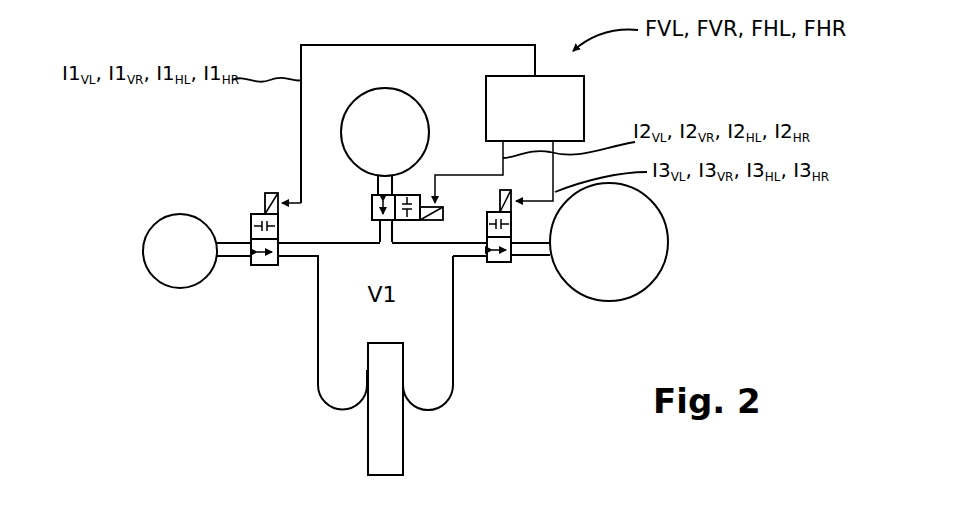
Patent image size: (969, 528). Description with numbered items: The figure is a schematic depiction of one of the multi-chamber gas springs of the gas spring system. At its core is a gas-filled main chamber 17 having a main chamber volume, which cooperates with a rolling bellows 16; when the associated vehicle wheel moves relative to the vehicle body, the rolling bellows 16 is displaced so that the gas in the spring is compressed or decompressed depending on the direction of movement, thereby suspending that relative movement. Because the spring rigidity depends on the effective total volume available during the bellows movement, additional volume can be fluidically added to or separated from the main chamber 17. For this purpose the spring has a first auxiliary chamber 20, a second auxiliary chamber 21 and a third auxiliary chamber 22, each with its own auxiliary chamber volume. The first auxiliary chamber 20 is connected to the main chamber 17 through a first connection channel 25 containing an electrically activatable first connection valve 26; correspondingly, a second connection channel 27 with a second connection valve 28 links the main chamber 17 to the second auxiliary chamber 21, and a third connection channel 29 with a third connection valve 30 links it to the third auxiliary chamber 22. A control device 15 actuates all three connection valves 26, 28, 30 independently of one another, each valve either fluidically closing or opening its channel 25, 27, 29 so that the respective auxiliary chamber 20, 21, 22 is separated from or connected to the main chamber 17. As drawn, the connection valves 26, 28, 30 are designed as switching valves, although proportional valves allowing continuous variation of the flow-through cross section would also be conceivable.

The control device 15 is at (570, 107).
The rolling bellows 16 is at (453, 377).
The main chamber 17 is at (332, 323).
The first auxiliary chamber 20 is at (175, 220).
The second auxiliary chamber 21 is at (383, 93).
The third auxiliary chamber 22 is at (653, 240).
The first connection channel 25 is at (232, 257).
The first connection valve 26 is at (251, 214).
The second connection channel 27 is at (374, 232).
The second connection valve 28 is at (371, 195).
The third connection channel 29 is at (470, 252).
The third connection valve 30 is at (503, 263).